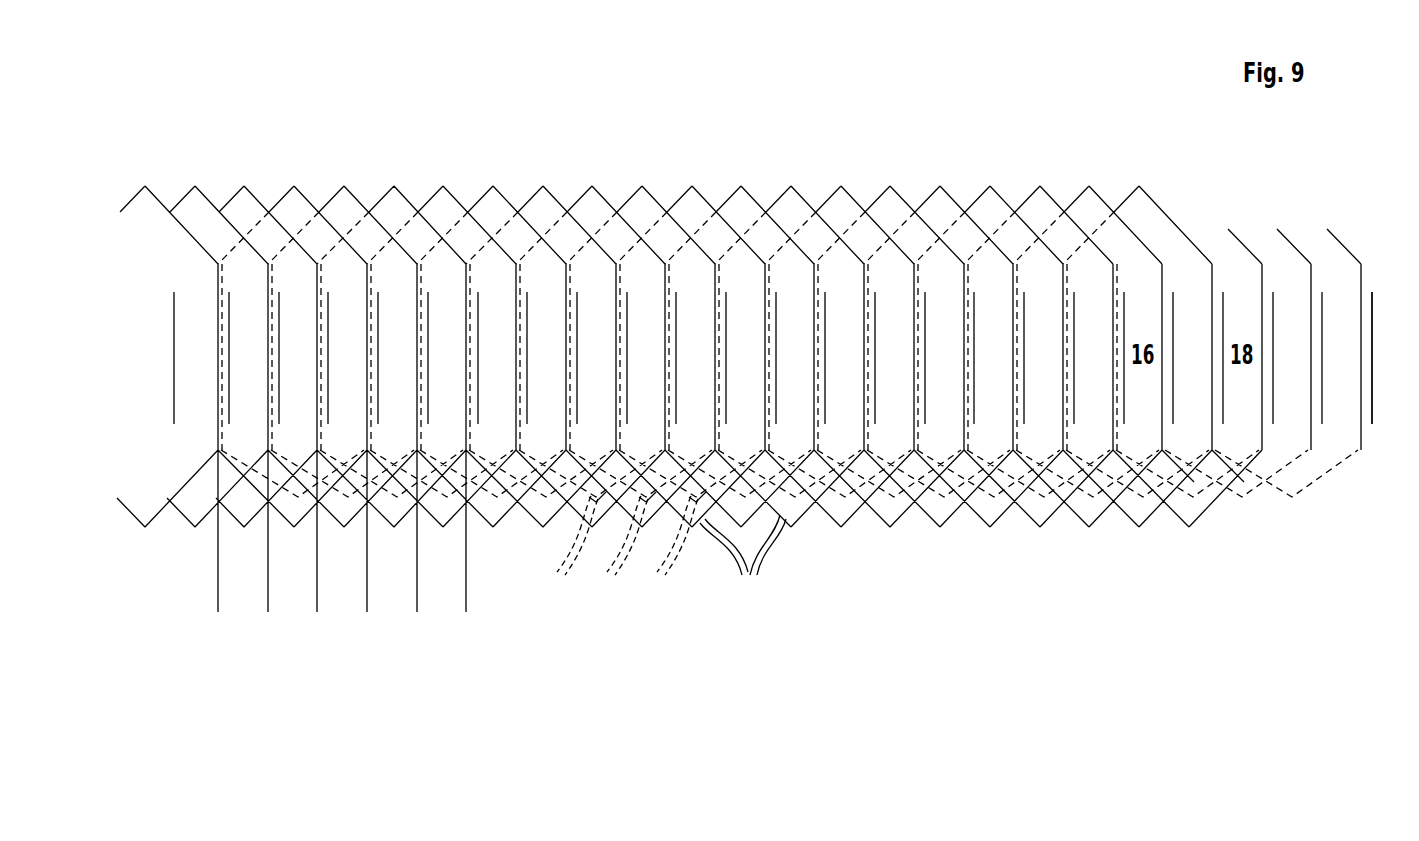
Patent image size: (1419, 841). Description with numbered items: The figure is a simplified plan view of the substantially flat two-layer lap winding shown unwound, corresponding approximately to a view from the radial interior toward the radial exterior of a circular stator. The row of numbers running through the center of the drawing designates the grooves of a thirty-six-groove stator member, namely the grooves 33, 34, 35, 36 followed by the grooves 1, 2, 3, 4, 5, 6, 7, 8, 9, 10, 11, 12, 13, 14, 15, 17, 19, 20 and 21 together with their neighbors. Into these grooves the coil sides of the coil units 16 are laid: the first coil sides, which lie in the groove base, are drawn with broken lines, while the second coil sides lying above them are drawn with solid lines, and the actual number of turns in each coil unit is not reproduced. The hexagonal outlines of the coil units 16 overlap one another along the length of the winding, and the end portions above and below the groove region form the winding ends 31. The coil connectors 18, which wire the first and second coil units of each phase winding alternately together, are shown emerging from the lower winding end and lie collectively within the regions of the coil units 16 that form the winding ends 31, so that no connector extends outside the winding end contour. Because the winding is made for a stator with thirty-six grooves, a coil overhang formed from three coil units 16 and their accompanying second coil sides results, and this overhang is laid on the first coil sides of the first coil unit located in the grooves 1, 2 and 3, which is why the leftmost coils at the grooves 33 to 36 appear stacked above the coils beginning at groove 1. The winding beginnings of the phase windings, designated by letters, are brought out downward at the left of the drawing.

The winding ends 31 is at (650, 152).
The coil connectors 18 is at (623, 550).
The coil units 16 is at (743, 562).
The groove 1 is at (406, 358).
The groove 2 is at (456, 358).
The groove 3 is at (506, 358).
The groove 4 is at (555, 358).
The groove 5 is at (605, 358).
The groove 6 is at (655, 358).
The groove 7 is at (704, 358).
The groove 8 is at (754, 358).
The groove 9 is at (804, 358).
The groove 10 is at (853, 358).
The groove 11 is at (903, 358).
The groove 12 is at (953, 358).
The groove 13 is at (1002, 358).
The groove 14 is at (1052, 358).
The groove 15 is at (1102, 358).
The groove 17 is at (1201, 358).
The groove 19 is at (1301, 358).
The groove 20 is at (1350, 358).
The groove 21 is at (1387, 358).
The groove 33 is at (201, 358).
The groove 34 is at (257, 358).
The groove 35 is at (307, 358).
The groove 36 is at (356, 358).